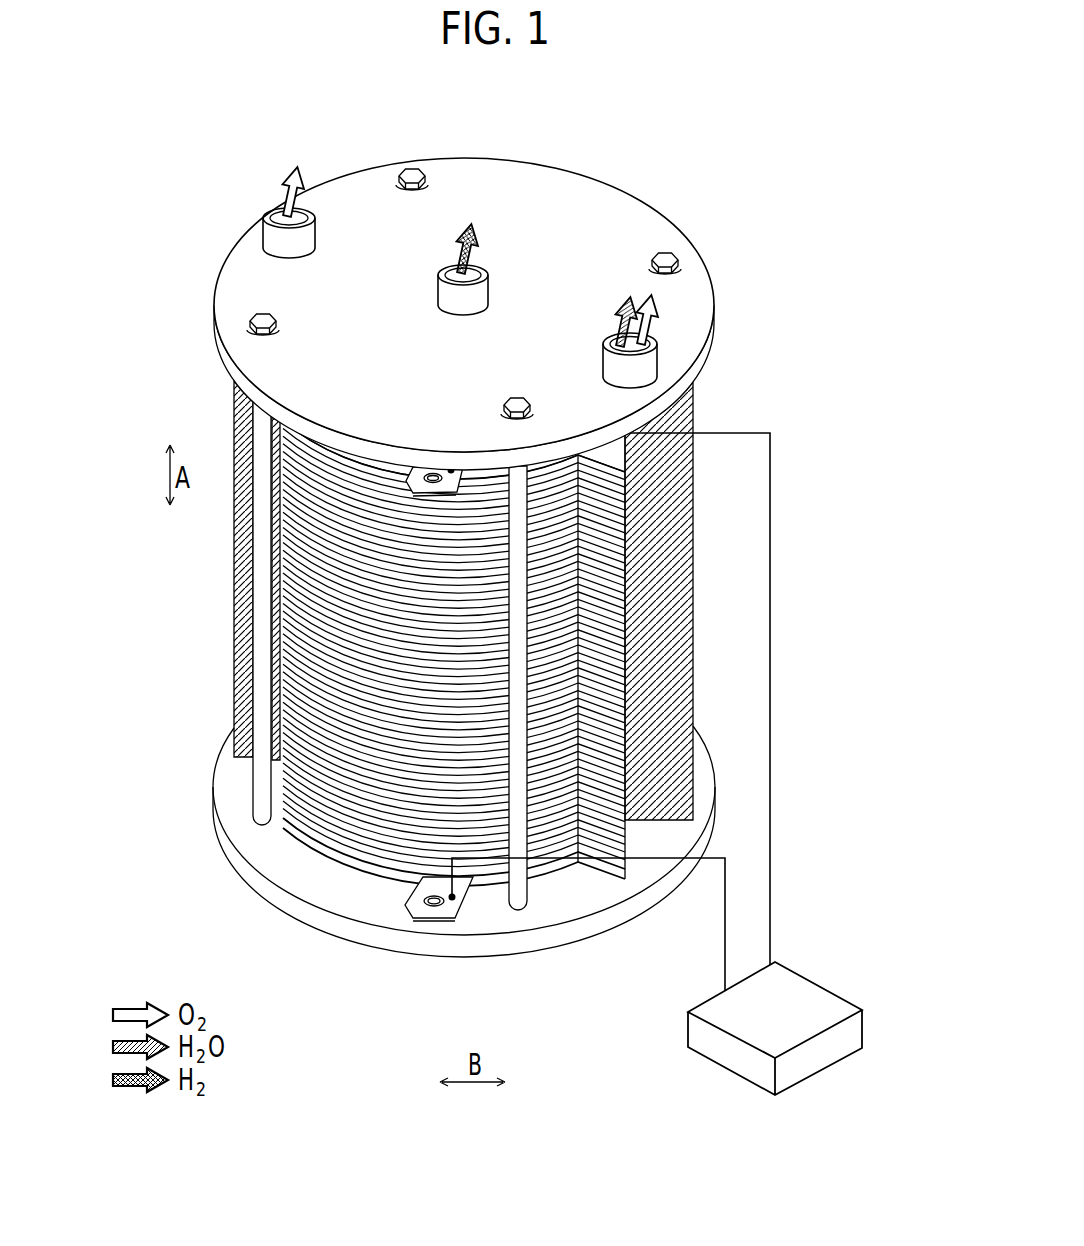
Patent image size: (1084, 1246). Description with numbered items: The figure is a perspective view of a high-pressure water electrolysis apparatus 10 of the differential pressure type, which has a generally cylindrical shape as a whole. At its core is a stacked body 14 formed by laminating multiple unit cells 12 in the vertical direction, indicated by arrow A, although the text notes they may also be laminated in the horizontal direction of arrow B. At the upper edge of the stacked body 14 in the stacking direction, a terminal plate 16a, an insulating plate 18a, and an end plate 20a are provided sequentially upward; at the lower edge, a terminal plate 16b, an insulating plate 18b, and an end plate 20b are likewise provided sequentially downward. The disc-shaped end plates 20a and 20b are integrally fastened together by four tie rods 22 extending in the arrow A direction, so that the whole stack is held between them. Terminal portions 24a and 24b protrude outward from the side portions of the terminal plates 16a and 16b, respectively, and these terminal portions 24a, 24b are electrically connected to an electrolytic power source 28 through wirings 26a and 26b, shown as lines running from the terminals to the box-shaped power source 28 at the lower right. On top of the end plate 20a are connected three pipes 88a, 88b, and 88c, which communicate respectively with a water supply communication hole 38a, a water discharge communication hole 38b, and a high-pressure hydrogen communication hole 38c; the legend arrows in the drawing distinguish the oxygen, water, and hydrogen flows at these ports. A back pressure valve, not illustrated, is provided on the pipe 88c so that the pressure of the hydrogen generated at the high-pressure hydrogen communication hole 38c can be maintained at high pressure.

The high-pressure water electrolysis apparatus 10 is at (581, 88).
The unit cell 12 is at (274, 614).
The stacked body 14 is at (406, 690).
The terminal plate 16a is at (393, 466).
The terminal plate 16b is at (568, 870).
The insulating plate 18a is at (356, 448).
The insulating plate 18b is at (566, 880).
The end plate 20a is at (651, 188).
The end plate 20b is at (698, 733).
The tie rod 22 is at (518, 912).
The terminal portion 24a is at (421, 468).
The terminal portion 24b is at (438, 917).
The wiring 26a is at (771, 918).
The wiring 26b is at (724, 956).
The electrolytic power source 28 is at (822, 1003).
The pipe 88a is at (308, 233).
The pipe 88b is at (649, 366).
The pipe 88c is at (486, 295).
The water supply communication hole 38a is at (292, 191).
The water discharge communication hole 38b is at (635, 320).
The high-pressure hydrogen communication hole 38c is at (466, 248).